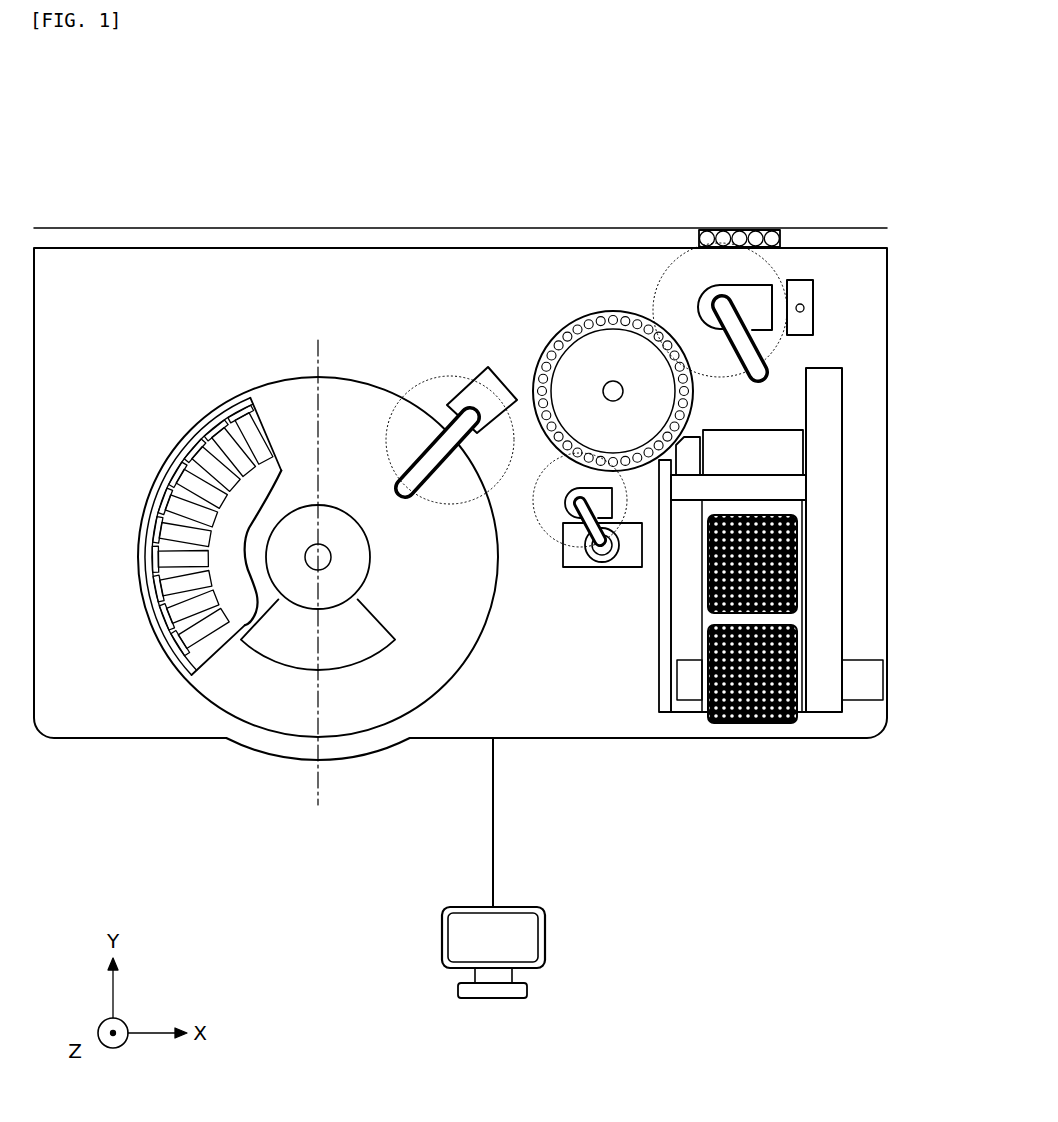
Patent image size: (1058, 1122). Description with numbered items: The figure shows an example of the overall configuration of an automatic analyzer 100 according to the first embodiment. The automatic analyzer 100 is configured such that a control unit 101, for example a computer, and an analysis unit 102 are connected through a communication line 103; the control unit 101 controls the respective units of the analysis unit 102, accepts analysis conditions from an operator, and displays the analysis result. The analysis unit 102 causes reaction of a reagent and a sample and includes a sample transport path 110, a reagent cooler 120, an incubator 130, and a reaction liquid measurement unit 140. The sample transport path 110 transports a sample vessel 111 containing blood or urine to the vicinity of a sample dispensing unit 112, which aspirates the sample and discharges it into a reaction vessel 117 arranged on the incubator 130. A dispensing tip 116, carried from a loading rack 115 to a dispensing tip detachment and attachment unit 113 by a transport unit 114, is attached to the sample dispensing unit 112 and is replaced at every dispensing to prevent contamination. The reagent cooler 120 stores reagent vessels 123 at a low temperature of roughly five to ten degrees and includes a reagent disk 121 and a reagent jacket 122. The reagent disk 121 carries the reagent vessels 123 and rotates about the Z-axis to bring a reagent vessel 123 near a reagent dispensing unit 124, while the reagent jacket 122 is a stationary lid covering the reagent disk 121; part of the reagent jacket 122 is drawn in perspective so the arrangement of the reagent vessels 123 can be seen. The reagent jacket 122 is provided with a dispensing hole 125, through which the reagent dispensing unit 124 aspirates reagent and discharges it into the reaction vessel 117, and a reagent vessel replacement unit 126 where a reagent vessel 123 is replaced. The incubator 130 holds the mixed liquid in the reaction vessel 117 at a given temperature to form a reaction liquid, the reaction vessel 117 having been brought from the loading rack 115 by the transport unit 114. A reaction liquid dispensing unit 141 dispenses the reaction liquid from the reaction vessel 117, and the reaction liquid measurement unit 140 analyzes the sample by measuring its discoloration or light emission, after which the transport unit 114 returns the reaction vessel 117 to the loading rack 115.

The automatic analyzer 100 is at (432, 137).
The control unit 101 is at (547, 938).
The analysis unit 102 is at (140, 740).
The communication line 103 is at (497, 820).
The sample transport path 110 is at (80, 242).
The sample vessel 111 is at (730, 229).
The sample dispensing unit 112 is at (776, 283).
The dispensing tip detachment and attachment unit 113 is at (813, 306).
The transport unit 114 is at (789, 604).
The loading rack 115 is at (808, 724).
The dispensing tip 116 is at (770, 724).
The reaction vessel 117 is at (722, 724).
The reagent cooler 120 is at (289, 494).
The reagent disk 121 is at (171, 520).
The reagent jacket 122 is at (281, 380).
The reagent vessel 123 is at (188, 518).
The reagent dispensing unit 124 is at (428, 387).
The dispensing hole 125 is at (400, 482).
The reagent vessel replacement unit 126 is at (340, 652).
The incubator 130 is at (610, 310).
The reaction liquid measurement unit 140 is at (585, 576).
The reaction liquid dispensing unit 141 is at (588, 527).